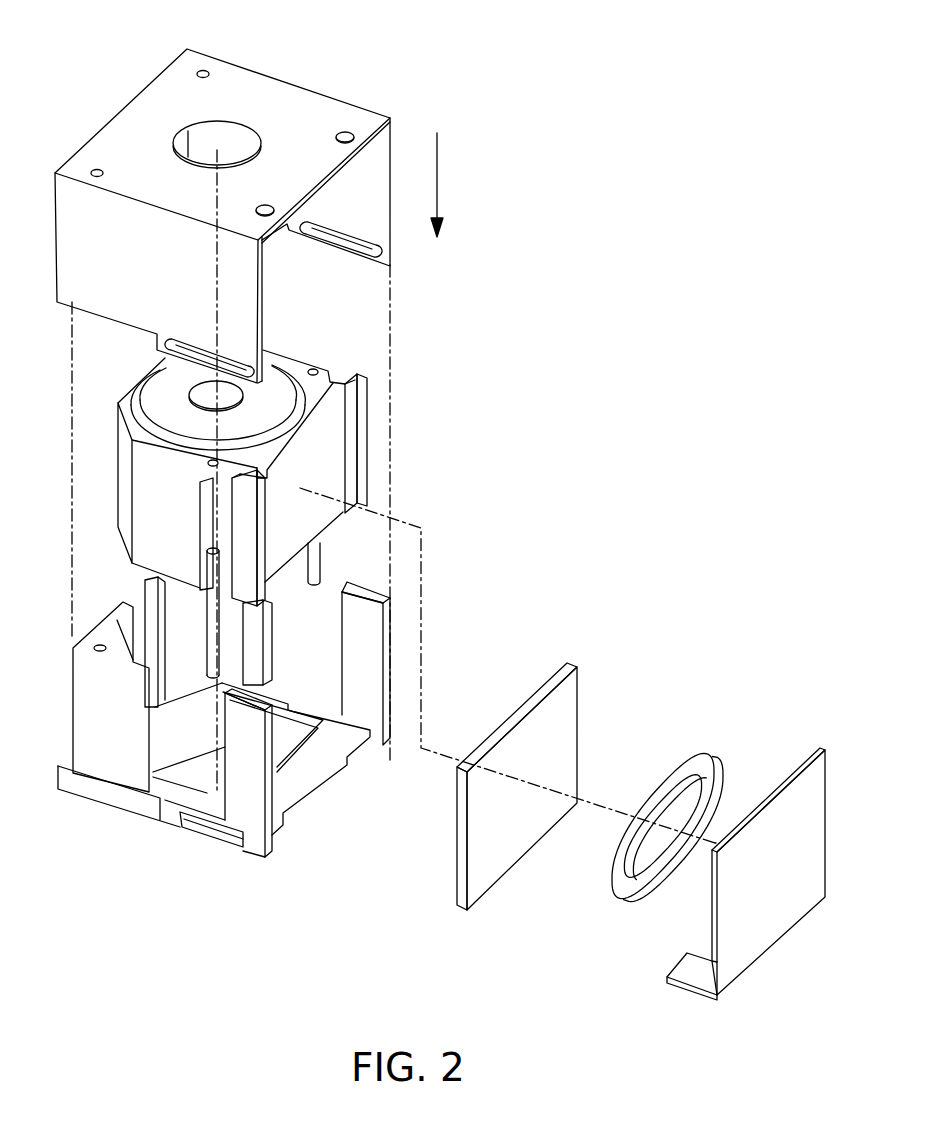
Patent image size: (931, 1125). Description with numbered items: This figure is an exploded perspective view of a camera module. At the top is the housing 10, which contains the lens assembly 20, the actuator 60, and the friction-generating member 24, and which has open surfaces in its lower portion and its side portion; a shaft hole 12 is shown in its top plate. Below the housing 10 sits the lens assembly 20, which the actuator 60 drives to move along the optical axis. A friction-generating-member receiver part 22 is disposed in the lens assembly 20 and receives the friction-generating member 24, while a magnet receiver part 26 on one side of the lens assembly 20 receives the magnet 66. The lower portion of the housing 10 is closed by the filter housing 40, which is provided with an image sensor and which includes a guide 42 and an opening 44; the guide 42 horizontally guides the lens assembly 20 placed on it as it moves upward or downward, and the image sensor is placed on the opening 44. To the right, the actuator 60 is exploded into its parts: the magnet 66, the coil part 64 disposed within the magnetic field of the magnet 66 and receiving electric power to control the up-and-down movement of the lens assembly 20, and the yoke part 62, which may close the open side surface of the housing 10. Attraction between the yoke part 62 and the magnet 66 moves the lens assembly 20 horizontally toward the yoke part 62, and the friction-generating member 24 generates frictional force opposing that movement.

The housing 10 is at (278, 79).
The shaft hole 12 is at (190, 118).
The lens assembly 20 is at (113, 467).
The friction-generating-member receiver part 22 is at (205, 522).
The friction-generating member 24 is at (215, 588).
The magnet receiver part 26 is at (345, 458).
The filter housing 40 is at (187, 868).
The guide 42 is at (268, 855).
The opening 44 is at (205, 782).
The actuator 60 is at (715, 629).
The yoke part 62 is at (822, 748).
The coil part 64 is at (677, 763).
The magnet 66 is at (568, 666).